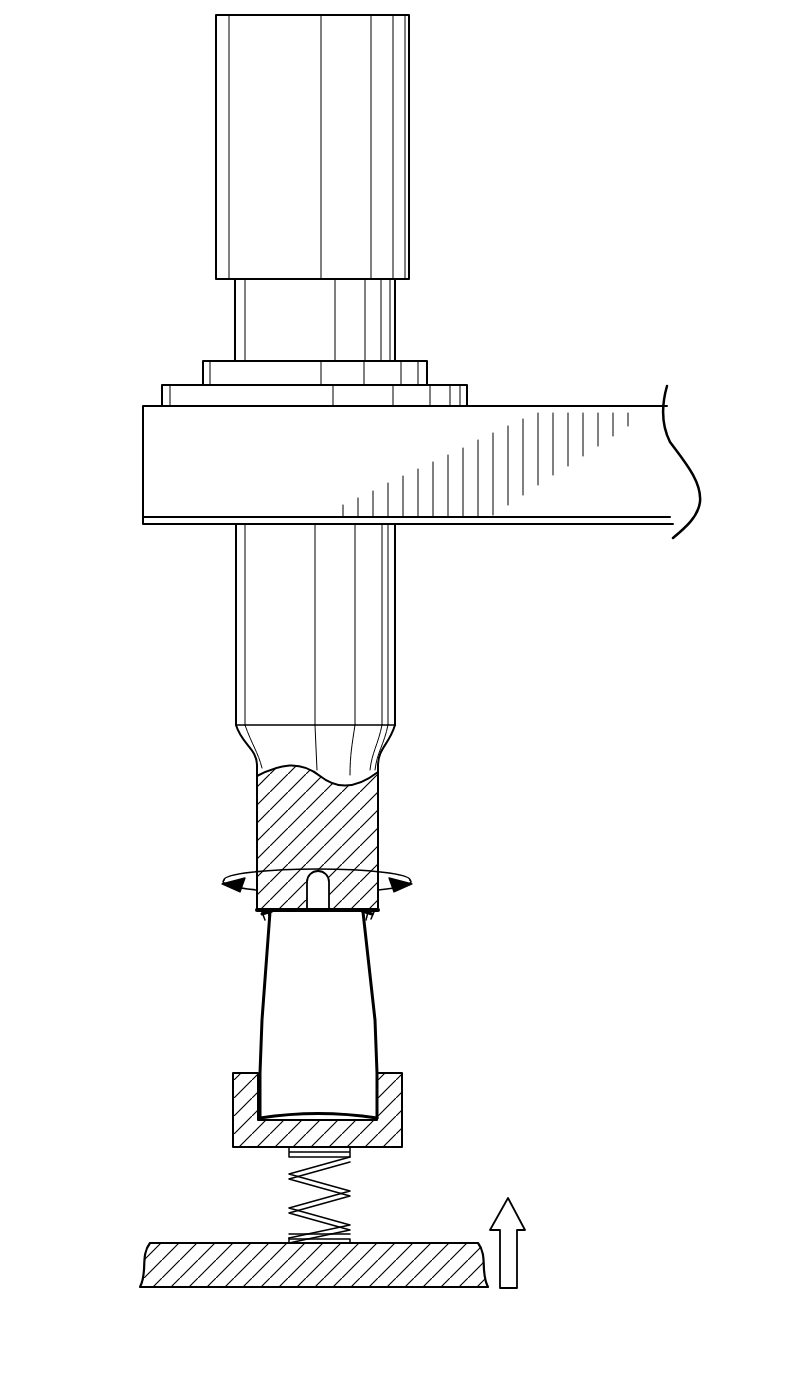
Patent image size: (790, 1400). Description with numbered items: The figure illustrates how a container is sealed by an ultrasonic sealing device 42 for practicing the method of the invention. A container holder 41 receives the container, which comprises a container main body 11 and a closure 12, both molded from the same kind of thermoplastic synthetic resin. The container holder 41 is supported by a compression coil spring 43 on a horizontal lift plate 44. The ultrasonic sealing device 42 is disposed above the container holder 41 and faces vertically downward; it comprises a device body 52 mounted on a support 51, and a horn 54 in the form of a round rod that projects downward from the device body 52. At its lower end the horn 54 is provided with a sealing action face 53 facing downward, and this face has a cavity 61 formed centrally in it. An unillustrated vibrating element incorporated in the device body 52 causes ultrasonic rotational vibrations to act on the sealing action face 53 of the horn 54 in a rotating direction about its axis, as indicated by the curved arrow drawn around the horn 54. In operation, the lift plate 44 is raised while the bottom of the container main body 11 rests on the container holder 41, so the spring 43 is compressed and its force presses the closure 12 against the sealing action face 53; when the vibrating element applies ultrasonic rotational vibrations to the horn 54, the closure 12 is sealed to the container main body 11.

The container main body 11 is at (258, 1030).
The closure 12 is at (303, 913).
The container holder 41 is at (397, 1127).
The ultrasonic sealing device 42 is at (153, 338).
The compression coil spring 43 is at (350, 1200).
The horizontal lift plate 44 is at (203, 1248).
The support 51 is at (557, 435).
The device body 52 is at (385, 142).
The sealing action face 53 is at (375, 910).
The horn 54 is at (365, 809).
The cavity 61 is at (317, 893).